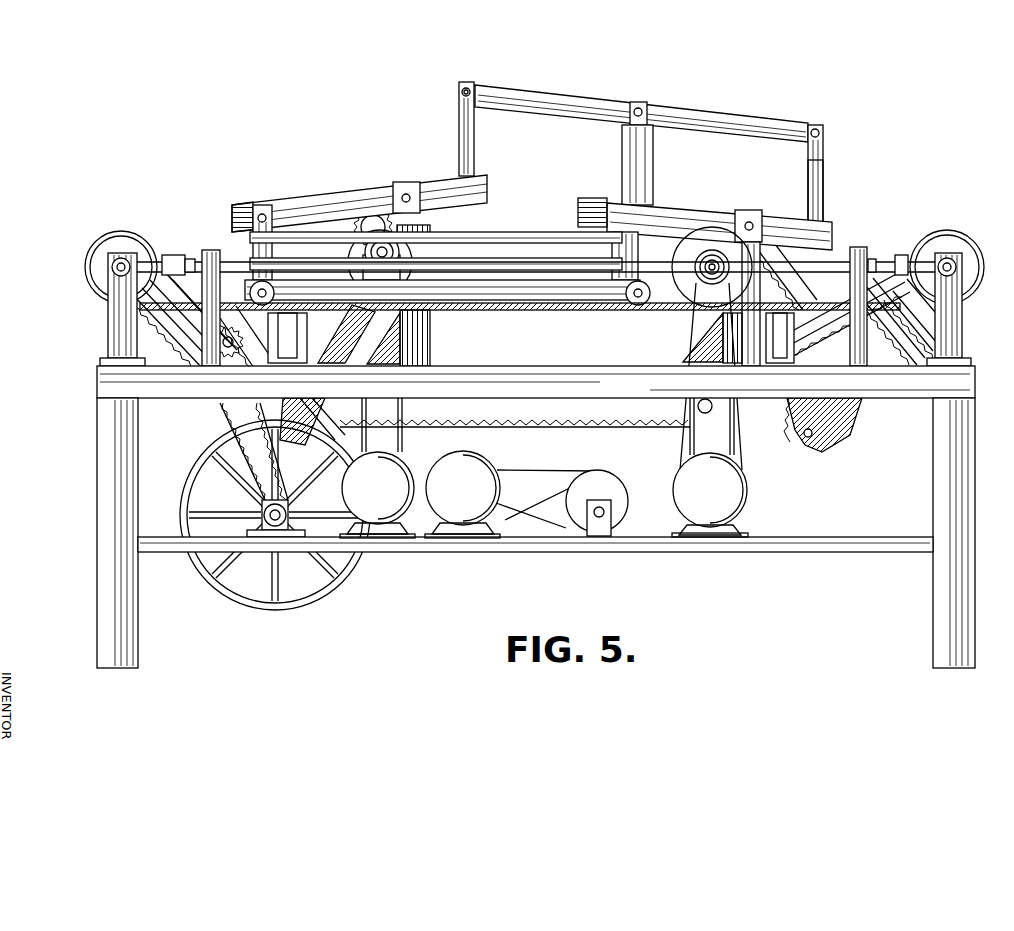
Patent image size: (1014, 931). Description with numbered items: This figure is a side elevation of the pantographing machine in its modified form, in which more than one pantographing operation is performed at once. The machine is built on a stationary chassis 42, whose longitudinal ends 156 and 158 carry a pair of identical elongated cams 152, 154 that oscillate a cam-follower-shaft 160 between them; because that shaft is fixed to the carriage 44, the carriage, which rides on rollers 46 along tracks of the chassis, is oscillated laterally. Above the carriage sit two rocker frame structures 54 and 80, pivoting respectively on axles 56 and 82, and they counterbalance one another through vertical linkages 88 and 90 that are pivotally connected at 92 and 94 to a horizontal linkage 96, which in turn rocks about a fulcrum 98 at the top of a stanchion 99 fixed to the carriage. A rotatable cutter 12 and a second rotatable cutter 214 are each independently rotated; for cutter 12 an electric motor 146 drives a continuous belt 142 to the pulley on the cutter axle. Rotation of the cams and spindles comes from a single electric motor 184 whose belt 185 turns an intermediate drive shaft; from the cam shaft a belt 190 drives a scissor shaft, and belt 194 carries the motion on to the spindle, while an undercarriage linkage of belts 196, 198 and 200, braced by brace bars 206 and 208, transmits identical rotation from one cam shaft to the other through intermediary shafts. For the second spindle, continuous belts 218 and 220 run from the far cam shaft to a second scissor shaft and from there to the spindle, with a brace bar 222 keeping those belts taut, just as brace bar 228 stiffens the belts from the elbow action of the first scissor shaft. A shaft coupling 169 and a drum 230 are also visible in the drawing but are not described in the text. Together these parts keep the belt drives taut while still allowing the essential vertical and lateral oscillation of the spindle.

The rotatable cutter 12 is at (365, 212).
The stationary chassis 42 is at (97, 378).
The carriage 44 is at (522, 297).
The rollers 46 is at (272, 292).
The rocker frame structure 54 is at (332, 203).
The axle 56 is at (268, 212).
The rocker frame structure 80 is at (728, 215).
The axle 82 is at (608, 205).
The vertical linkage 88 is at (458, 122).
The vertical linkage 90 is at (824, 170).
The pivotal connection 92 is at (474, 88).
The pivotal connection 94 is at (820, 127).
The horizontal linkage 96 is at (715, 118).
The fulcrum 98 is at (638, 106).
The stanchion 99 is at (648, 168).
The continuous belt 142 is at (400, 349).
The electric motor 146 is at (400, 463).
The elongated cam 152 is at (138, 250).
The elongated cam 154 is at (960, 248).
The longitudinal end of stationary chassis 156 is at (98, 330).
The longitudinal end of stationary chassis 158 is at (1006, 320).
The cam-follower-shaft 160 is at (500, 262).
The shaft coupling 169 is at (158, 262).
The electric motor 184 is at (475, 475).
The belt 185 is at (228, 418).
The belt 190 is at (178, 328).
The belt 194 is at (407, 327).
The belt 196 is at (258, 345).
The belt 198 is at (530, 414).
The belt 200 is at (800, 340).
The brace bar 206 is at (250, 350).
The brace bar 208 is at (808, 350).
The second rotatable cutter 214 is at (692, 250).
The continuous belt 218 is at (900, 345).
The continuous belt 220 is at (792, 290).
The brace bar 222 is at (880, 352).
The brace bar 228 is at (195, 345).
The drum 230 is at (727, 490).